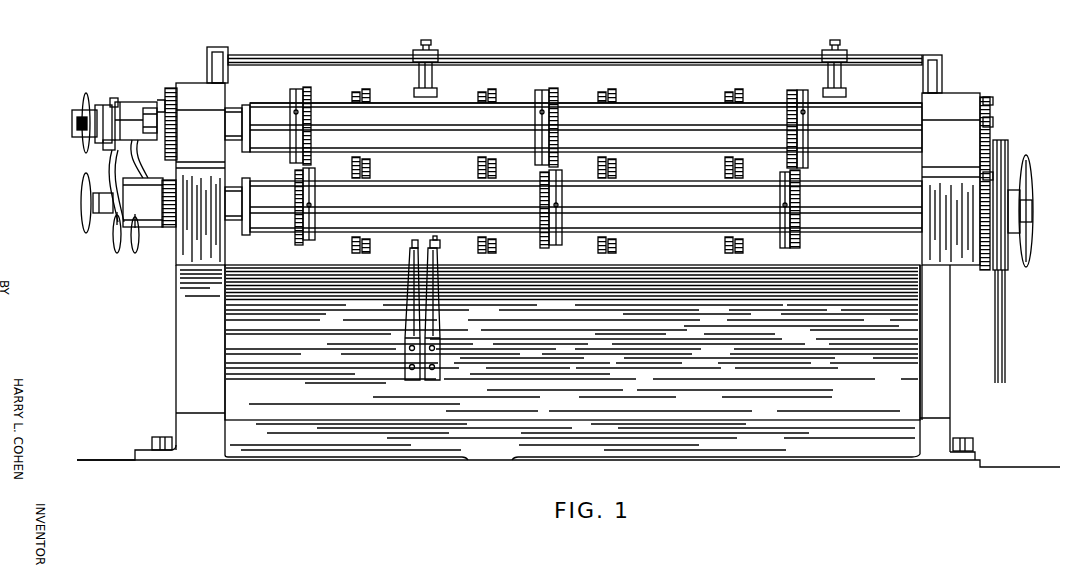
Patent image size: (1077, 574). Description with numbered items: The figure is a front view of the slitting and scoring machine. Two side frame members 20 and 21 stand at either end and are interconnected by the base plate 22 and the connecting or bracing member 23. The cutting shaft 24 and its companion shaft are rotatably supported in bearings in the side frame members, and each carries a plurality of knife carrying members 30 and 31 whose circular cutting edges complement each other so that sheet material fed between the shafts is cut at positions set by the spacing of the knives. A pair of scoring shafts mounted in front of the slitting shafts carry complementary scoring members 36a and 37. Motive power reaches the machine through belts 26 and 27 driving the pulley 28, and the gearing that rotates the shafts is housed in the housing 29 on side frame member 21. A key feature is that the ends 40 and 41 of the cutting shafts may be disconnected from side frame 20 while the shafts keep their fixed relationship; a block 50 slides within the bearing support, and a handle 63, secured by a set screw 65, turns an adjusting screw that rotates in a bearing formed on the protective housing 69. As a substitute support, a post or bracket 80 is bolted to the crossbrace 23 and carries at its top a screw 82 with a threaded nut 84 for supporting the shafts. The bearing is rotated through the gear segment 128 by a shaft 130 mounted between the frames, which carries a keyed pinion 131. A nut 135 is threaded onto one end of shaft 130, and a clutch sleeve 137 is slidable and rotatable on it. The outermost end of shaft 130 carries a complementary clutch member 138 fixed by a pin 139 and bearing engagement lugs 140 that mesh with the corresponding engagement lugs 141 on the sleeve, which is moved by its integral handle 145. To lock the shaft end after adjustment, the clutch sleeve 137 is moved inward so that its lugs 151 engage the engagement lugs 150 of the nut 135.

The side frame member 20 is at (218, 340).
The side frame member 21 is at (952, 393).
The base plate 22 is at (543, 430).
The connecting or bracing member 23 is at (574, 370).
The cutting shaft 24 is at (330, 102).
The belt 26 is at (1006, 352).
The belt 27 is at (995, 352).
The pulley 28 is at (1003, 146).
The housing 29 is at (952, 120).
The knife carrying member 30 is at (297, 89).
The knife carrying member 31 is at (312, 245).
The scoring member 36a is at (366, 90).
The scoring member 37 is at (372, 247).
The shaft end 40 is at (257, 233).
The shaft end 41 is at (250, 105).
The block 50 is at (233, 108).
The handle 63 is at (84, 98).
The set screw 65 is at (102, 193).
The covering or protective housing 69 is at (150, 182).
The post or bracket 80 is at (440, 318).
The screw 82 is at (440, 245).
The nut 84 is at (412, 245).
The gear segment 128 is at (172, 88).
The shaft 130 is at (396, 126).
The pinion 131 is at (181, 110).
The nut 135 is at (108, 150).
The clutch sleeve 137 is at (131, 102).
The complementary clutch member 138 is at (72, 112).
The pin 139 is at (77, 123).
The engagement lug 140 is at (103, 105).
The engagement lug 141 is at (114, 98).
The handle 145 is at (113, 243).
The engagement lug 150 is at (160, 100).
The lug 151 is at (148, 108).